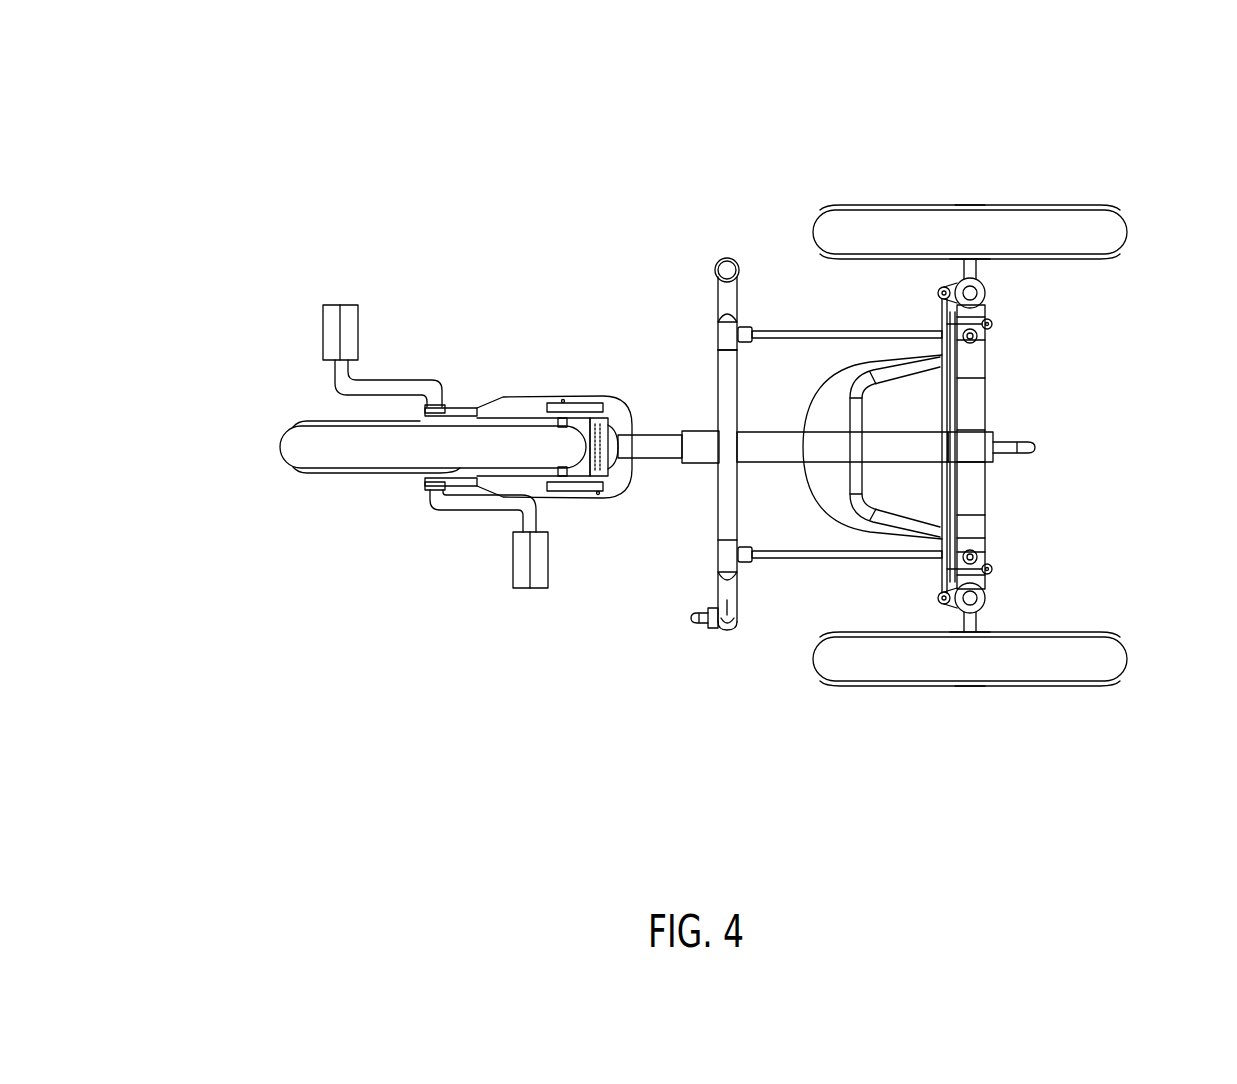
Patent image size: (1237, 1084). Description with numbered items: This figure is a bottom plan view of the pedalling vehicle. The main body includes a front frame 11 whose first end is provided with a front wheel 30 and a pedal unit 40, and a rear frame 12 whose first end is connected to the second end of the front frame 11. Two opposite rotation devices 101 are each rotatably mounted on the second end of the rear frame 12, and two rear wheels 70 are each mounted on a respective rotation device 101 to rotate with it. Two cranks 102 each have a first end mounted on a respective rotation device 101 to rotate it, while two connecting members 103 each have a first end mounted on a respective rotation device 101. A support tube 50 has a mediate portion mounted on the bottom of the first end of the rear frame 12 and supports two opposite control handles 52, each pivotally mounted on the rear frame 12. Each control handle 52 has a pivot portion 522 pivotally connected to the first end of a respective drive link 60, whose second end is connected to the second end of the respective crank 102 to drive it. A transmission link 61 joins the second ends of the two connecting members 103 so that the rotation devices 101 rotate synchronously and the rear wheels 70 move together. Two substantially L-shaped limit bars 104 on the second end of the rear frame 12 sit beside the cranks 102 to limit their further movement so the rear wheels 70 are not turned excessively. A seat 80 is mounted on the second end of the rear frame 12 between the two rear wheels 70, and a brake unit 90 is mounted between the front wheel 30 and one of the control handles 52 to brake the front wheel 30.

The front frame 11 is at (651, 440).
The rear frame 12 is at (752, 446).
The front wheel 30 is at (322, 450).
The pedal unit 40 is at (450, 503).
The support tube 50 is at (720, 515).
The control handle 52 is at (727, 630).
The pivot portion 522 is at (718, 310).
The drive link 60 is at (837, 333).
The transmission link 61 is at (942, 396).
The rear wheel 70 is at (1078, 230).
The seat 80 is at (883, 477).
The brake unit 90 is at (697, 625).
The rotation device 101 is at (976, 265).
The crank 102 is at (992, 324).
The connecting member 103 is at (948, 285).
The limit bar 104 is at (975, 339).